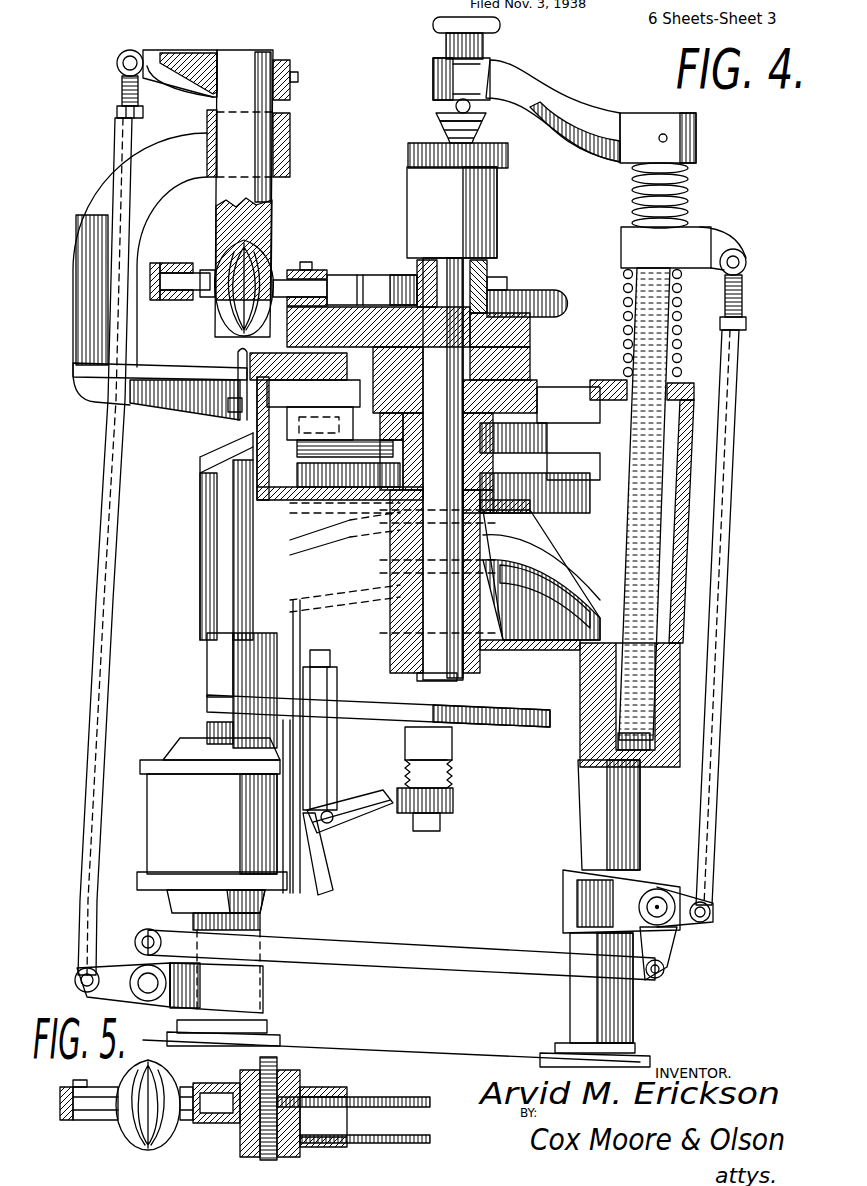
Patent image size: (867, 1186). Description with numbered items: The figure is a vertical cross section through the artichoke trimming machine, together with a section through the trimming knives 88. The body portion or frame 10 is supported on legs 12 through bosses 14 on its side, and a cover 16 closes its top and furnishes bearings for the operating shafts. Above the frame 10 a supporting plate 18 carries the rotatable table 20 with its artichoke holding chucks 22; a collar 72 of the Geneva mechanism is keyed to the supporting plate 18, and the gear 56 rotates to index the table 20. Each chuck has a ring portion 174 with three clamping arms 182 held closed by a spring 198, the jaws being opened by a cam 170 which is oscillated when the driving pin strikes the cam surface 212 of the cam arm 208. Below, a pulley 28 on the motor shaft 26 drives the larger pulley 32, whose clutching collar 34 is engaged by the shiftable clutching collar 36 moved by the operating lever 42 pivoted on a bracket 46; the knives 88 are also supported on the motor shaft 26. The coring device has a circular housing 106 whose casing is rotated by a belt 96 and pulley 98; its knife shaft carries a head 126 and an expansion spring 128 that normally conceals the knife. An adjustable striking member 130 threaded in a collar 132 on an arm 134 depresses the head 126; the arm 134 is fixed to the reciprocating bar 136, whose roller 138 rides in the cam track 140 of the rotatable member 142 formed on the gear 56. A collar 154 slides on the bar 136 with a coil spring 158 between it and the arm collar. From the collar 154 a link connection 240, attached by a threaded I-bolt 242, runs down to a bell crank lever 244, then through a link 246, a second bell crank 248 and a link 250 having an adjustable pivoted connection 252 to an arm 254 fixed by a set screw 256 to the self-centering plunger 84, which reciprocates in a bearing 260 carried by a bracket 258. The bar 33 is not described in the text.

In FIG. 4, the frame 10 is at (693, 645).
In FIG. 4, the legs 12 is at (217, 677).
In FIG. 4, the bosses 14 is at (210, 497).
In FIG. 4, the cover 16 is at (696, 391).
In FIG. 4, the supporting plate 18 is at (258, 358).
In FIG. 4, the rotatable table 20 is at (347, 283).
In FIG. 4, the artichoke holding chucks 22 is at (291, 266).
In FIG. 5, the artichoke holding chucks 22 is at (52, 1105).
In FIG. 4, the motor shaft 26 is at (233, 657).
In FIG. 5, the motor shaft 26 is at (280, 1121).
In FIG. 4, the pulley 28 is at (213, 718).
In FIG. 4, the larger pulley 32 is at (491, 725).
In FIG. 4, the bar 33 is at (378, 714).
In FIG. 4, the clutching collar 34 is at (457, 745).
In FIG. 4, the shiftable clutching collar 36 is at (454, 775).
In FIG. 4, the operating lever 42 is at (377, 810).
In FIG. 4, the bracket 46 is at (310, 849).
In FIG. 4, the gear 56 is at (590, 501).
In FIG. 4, the collar 72 is at (370, 397).
In FIG. 4, the plunger 84 is at (263, 200).
In FIG. 5, the knives 88 is at (373, 1137).
In FIG. 4, the belt 96 is at (408, 154).
In FIG. 4, the pulley 98 is at (422, 133).
In FIG. 4, the circular housing 106 is at (480, 188).
In FIG. 4, the head 126 is at (466, 113).
In FIG. 4, the expansion spring 128 is at (432, 120).
In FIG. 4, the adjustable striking member 130 is at (500, 30).
In FIG. 4, the collar 132 is at (470, 78).
In FIG. 4, the arm 134 is at (530, 97).
In FIG. 4, the reciprocating bar 136 is at (651, 444).
In FIG. 4, the roller 138 is at (580, 594).
In FIG. 4, the cam track 140 is at (590, 554).
In FIG. 4, the rotatable member 142 is at (540, 620).
In FIG. 4, the collar 154 is at (703, 257).
In FIG. 4, the coil spring 158 is at (681, 191).
In FIG. 4, the cam 170 is at (501, 277).
In FIG. 4, the ring portion 174 is at (470, 672).
In FIG. 4, the arms 182 is at (183, 277).
In FIG. 5, the arms 182 is at (93, 1108).
In FIG. 4, the spring 198 is at (566, 299).
In FIG. 4, the cam arm 208 is at (368, 425).
In FIG. 4, the cam surface 212 is at (300, 432).
In FIG. 4, the link connection 240 is at (739, 356).
In FIG. 4, the threaded I-bolt 242 is at (744, 294).
In FIG. 4, the bell crank lever 244 is at (661, 948).
In FIG. 4, the link 246 is at (398, 950).
In FIG. 4, the bell crank 248 is at (117, 975).
In FIG. 4, the link 250 is at (112, 578).
In FIG. 4, the adjustable pivoted connection 252 is at (122, 92).
In FIG. 4, the arm 254 is at (198, 58).
In FIG. 4, the set screw 256 is at (293, 77).
In FIG. 4, the bracket 258 is at (180, 404).
In FIG. 4, the bearing 260 is at (290, 146).